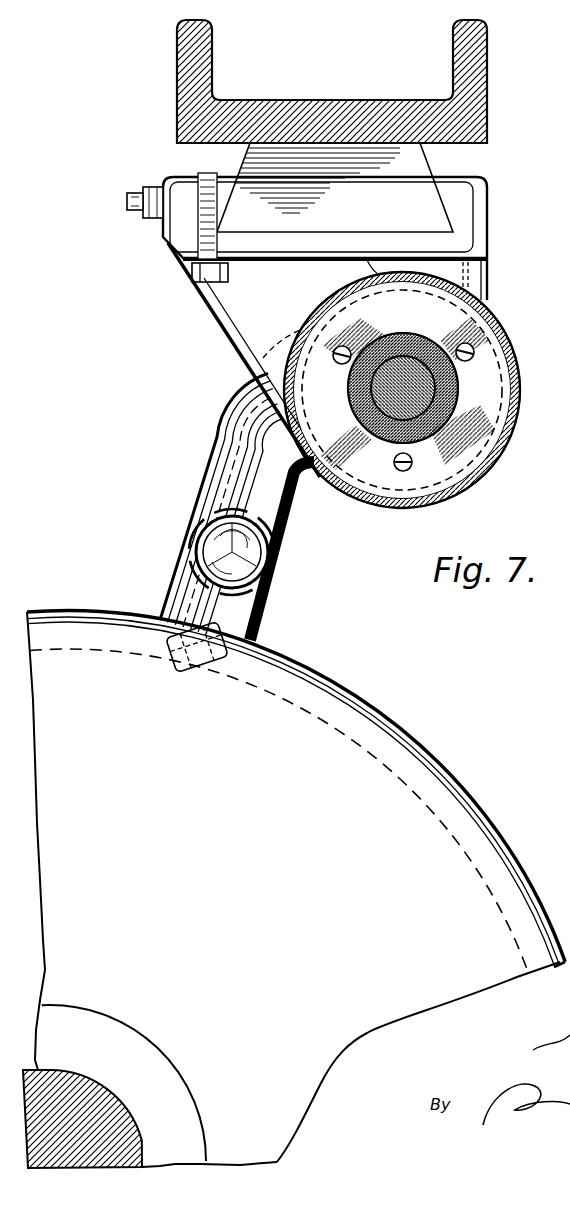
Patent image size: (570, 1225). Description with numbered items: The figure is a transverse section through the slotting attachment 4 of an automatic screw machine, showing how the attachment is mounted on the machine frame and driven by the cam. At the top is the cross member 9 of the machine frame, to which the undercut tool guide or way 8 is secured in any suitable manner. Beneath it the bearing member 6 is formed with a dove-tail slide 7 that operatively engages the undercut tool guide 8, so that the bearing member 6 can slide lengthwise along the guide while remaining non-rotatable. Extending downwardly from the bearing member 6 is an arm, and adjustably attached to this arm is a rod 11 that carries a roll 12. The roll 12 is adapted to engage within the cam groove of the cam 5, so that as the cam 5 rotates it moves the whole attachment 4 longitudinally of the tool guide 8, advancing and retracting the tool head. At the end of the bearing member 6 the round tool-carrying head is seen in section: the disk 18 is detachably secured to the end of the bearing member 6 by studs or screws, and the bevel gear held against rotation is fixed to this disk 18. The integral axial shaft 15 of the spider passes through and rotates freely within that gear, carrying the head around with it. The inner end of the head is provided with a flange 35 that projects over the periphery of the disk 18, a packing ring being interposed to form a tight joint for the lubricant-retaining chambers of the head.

The attachment 4 is at (320, 303).
The cam 5 is at (294, 889).
The bearing member 6 is at (248, 310).
The dove-tail slide 7 is at (488, 203).
The tool guide 8 is at (335, 187).
The cross member 9 is at (368, 125).
The rod 11 is at (217, 552).
The roll 12 is at (142, 615).
The axial shaft 15 is at (398, 403).
The disk 18 is at (402, 390).
The flange 35 is at (522, 380).